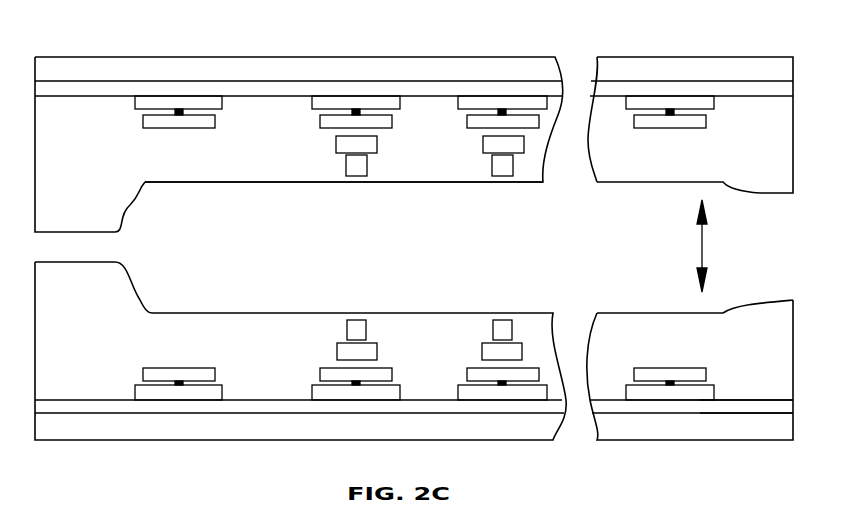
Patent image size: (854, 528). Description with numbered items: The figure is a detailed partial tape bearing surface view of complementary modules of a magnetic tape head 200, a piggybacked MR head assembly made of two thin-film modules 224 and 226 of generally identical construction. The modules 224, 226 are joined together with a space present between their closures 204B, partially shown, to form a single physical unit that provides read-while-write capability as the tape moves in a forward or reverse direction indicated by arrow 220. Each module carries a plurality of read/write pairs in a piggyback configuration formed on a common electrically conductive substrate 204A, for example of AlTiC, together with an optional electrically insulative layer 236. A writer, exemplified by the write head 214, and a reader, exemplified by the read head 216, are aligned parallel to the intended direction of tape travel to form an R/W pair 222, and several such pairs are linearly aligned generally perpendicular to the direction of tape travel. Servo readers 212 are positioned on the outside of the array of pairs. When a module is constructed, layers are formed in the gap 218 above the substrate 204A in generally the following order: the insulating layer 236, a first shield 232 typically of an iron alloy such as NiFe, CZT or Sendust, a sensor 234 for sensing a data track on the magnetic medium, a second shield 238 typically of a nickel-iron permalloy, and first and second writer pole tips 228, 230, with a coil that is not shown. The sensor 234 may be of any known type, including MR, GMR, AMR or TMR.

The magnetic tape head 200 is at (348, 44).
The substrate 204A is at (160, 79).
The closure 204B is at (127, 222).
The servo reader 212 is at (213, 365).
The write head 214 is at (349, 319).
The read head 216 is at (341, 368).
The gap 218 is at (220, 182).
The arrow 220 is at (706, 248).
The R/W pair 222 is at (368, 302).
The thin-film module 224 is at (723, 57).
The thin-film module 226 is at (708, 440).
The first writer pole tip 228 is at (337, 352).
The second writer pole tip 230 is at (347, 331).
The first shield 232 is at (312, 392).
The sensor 234 is at (316, 384).
The electrically insulative layer 236 is at (785, 393).
The second shield 238 is at (320, 375).